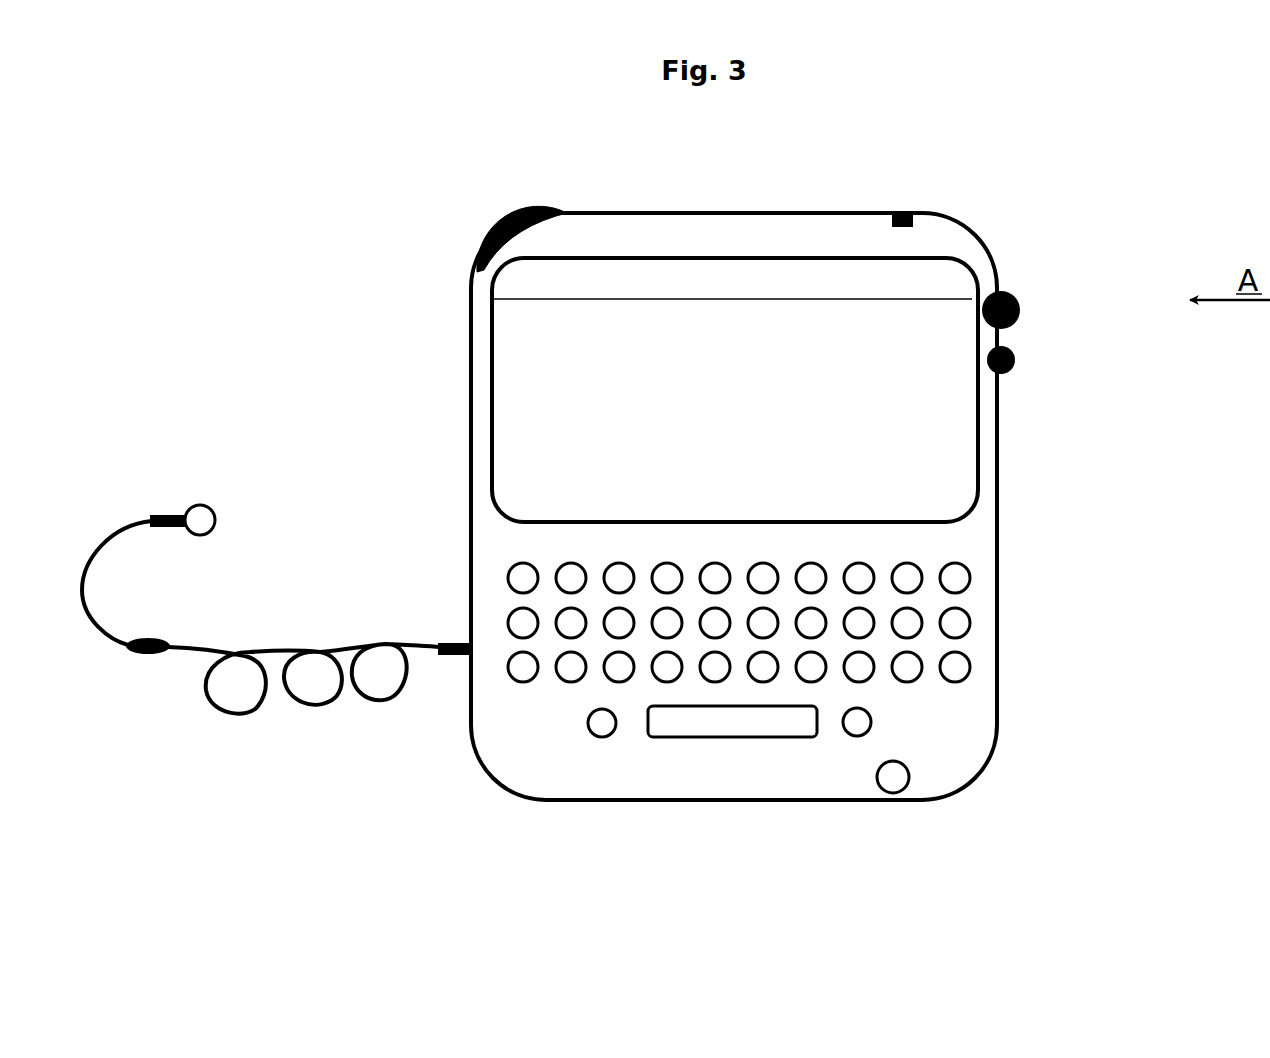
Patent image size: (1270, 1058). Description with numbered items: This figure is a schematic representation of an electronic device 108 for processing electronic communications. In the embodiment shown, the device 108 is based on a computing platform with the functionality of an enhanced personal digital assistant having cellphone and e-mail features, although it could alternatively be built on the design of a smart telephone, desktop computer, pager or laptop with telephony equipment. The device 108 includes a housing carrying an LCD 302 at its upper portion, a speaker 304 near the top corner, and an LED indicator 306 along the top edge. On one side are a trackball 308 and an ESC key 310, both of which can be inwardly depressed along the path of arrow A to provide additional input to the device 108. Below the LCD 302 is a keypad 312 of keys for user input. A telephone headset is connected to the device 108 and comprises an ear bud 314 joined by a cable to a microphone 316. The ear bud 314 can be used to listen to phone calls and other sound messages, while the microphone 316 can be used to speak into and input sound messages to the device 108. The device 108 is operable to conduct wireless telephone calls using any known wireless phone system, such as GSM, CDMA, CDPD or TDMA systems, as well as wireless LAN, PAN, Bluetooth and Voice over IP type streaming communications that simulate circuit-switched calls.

The electronic device 108 is at (700, 824).
The LCD 302 is at (493, 504).
The speaker 304 is at (492, 235).
The LED indicator 306 is at (915, 222).
The trackball 308 is at (1020, 310).
The ESC key 310 is at (1020, 360).
The keypad 312 is at (988, 628).
The ear bud 314 is at (234, 516).
The microphone 316 is at (178, 636).